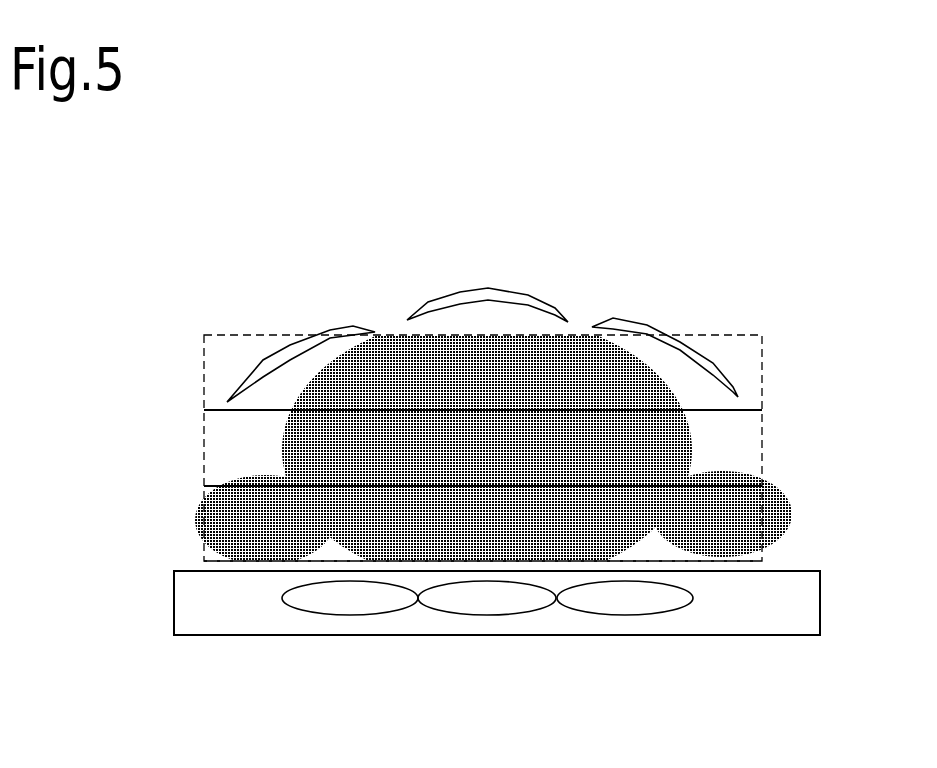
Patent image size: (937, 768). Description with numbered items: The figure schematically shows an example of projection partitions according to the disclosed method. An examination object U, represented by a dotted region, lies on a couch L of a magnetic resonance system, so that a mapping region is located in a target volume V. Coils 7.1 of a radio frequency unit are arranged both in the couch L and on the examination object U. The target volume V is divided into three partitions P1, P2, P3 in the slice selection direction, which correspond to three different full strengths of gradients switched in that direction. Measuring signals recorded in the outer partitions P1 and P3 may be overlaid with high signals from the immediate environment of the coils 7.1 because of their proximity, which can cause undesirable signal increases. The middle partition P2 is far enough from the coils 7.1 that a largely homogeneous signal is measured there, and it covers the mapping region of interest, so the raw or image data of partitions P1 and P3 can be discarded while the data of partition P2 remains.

The coils 7.1 is at (323, 328).
The examination object U is at (420, 363).
The target volume V is at (187, 327).
The first partition P1 is at (763, 363).
The middle partition P2 is at (763, 435).
The third partition P3 is at (205, 495).
The couch L is at (820, 609).